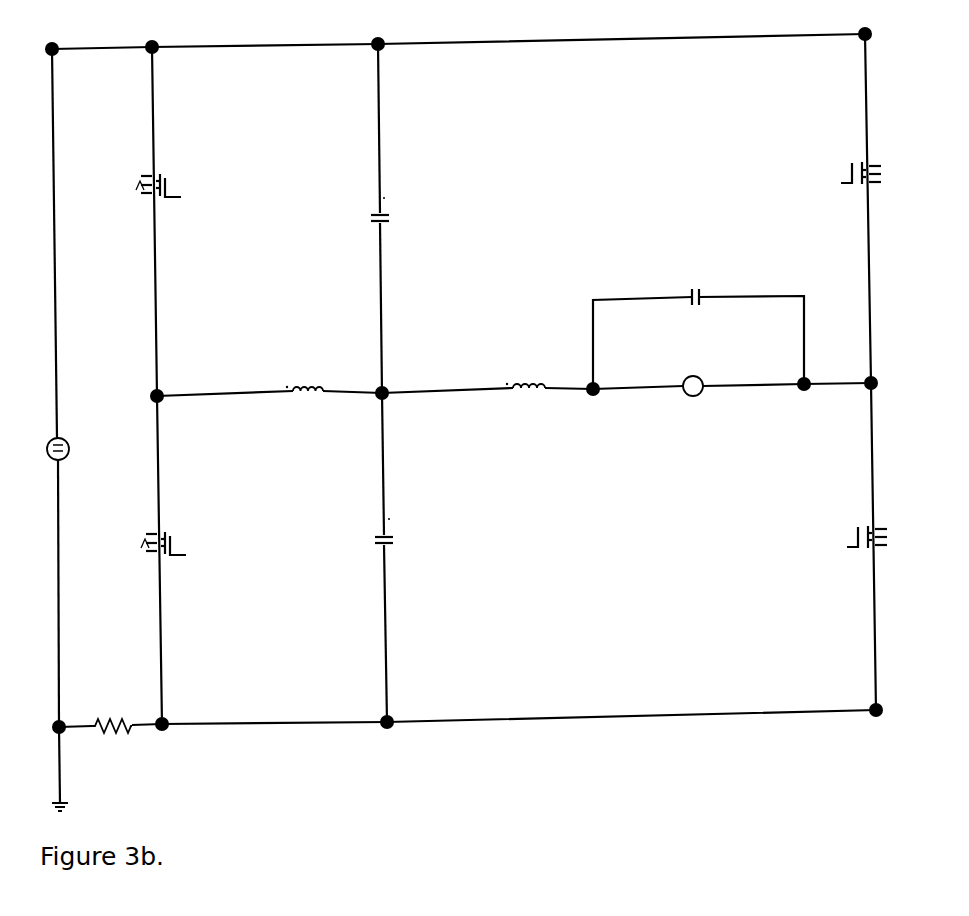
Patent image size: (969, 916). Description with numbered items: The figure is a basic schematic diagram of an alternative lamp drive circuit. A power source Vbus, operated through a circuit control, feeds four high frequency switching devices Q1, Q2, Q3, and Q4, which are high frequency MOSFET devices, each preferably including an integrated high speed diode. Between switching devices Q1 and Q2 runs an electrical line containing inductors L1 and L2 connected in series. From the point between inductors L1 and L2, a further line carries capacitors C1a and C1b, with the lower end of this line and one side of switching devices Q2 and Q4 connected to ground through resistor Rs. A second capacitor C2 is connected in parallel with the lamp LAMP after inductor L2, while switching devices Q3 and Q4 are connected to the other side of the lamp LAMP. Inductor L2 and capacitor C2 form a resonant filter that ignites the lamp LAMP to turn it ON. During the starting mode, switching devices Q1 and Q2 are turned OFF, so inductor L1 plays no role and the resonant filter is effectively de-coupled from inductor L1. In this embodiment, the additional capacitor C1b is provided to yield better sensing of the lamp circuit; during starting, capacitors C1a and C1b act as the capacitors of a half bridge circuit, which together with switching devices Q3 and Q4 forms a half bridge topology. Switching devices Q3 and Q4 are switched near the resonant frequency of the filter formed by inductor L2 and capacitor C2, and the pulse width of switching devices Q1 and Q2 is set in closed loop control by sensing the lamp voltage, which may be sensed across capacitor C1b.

The high frequency switching device Q1 is at (165, 179).
The high frequency switching device Q2 is at (173, 528).
The high frequency switching device Q3 is at (870, 159).
The high frequency switching device Q4 is at (880, 523).
The capacitor C1a is at (402, 207).
The additional capacitor C1b is at (405, 525).
The second capacitor C2 is at (698, 324).
The inductor L1 is at (304, 376).
The inductor L2 is at (525, 373).
The lamp LAMP is at (688, 403).
The power source Vbus is at (77, 449).
The resistor Rs is at (112, 712).